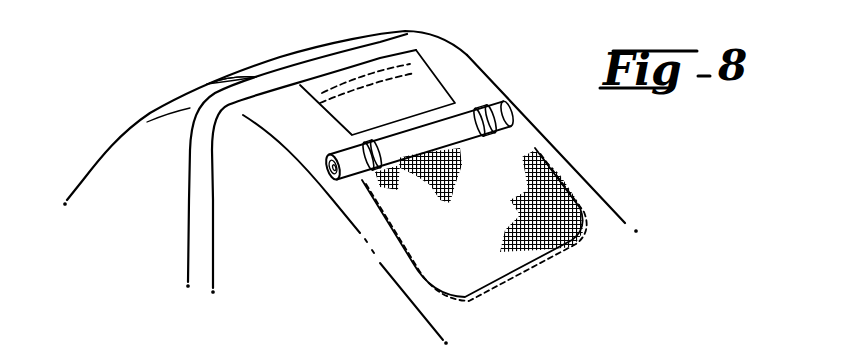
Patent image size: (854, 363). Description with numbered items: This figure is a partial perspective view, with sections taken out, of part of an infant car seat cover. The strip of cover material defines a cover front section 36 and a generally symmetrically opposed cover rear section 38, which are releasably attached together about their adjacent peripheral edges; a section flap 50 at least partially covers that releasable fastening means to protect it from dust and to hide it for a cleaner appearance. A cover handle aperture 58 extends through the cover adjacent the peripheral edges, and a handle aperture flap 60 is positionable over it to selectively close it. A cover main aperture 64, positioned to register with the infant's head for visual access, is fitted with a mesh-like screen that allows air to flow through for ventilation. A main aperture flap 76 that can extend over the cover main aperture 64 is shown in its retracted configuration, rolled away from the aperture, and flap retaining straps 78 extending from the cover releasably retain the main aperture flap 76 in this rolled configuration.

The cover front section 36 is at (598, 239).
The cover rear section 38 is at (132, 118).
The section flap 50 is at (200, 249).
The cover handle aperture 58 is at (423, 38).
The handle aperture flap 60 is at (308, 52).
The cover main aperture 64 is at (522, 148).
The main aperture flap 76 is at (426, 181).
The flap retaining strap 78 is at (503, 100).